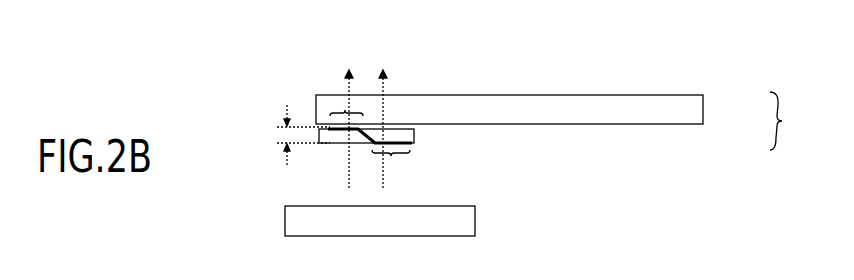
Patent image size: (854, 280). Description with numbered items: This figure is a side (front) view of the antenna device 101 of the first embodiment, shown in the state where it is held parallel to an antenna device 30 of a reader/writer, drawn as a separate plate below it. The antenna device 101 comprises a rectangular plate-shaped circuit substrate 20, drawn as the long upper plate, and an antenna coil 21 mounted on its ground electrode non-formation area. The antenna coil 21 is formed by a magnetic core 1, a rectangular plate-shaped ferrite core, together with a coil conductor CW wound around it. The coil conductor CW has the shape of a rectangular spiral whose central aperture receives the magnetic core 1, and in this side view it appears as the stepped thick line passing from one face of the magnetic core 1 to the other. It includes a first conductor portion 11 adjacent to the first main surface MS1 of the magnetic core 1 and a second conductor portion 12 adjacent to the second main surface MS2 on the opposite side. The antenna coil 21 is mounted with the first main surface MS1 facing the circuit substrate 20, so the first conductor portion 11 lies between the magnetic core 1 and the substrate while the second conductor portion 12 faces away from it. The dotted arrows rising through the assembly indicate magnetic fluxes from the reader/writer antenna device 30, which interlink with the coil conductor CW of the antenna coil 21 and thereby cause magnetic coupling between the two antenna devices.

The circuit substrate 20 is at (685, 112).
The antenna device 101 is at (791, 121).
The magnetic core 1 is at (414, 135).
The antenna coil 21 is at (425, 147).
The first conductor portion 11 is at (345, 110).
The second conductor portion 12 is at (391, 170).
The coil conductor CW is at (362, 145).
The first main surface MS1 is at (287, 94).
The second main surface MS2 is at (287, 179).
The antenna device of reader/writer 30 is at (463, 225).